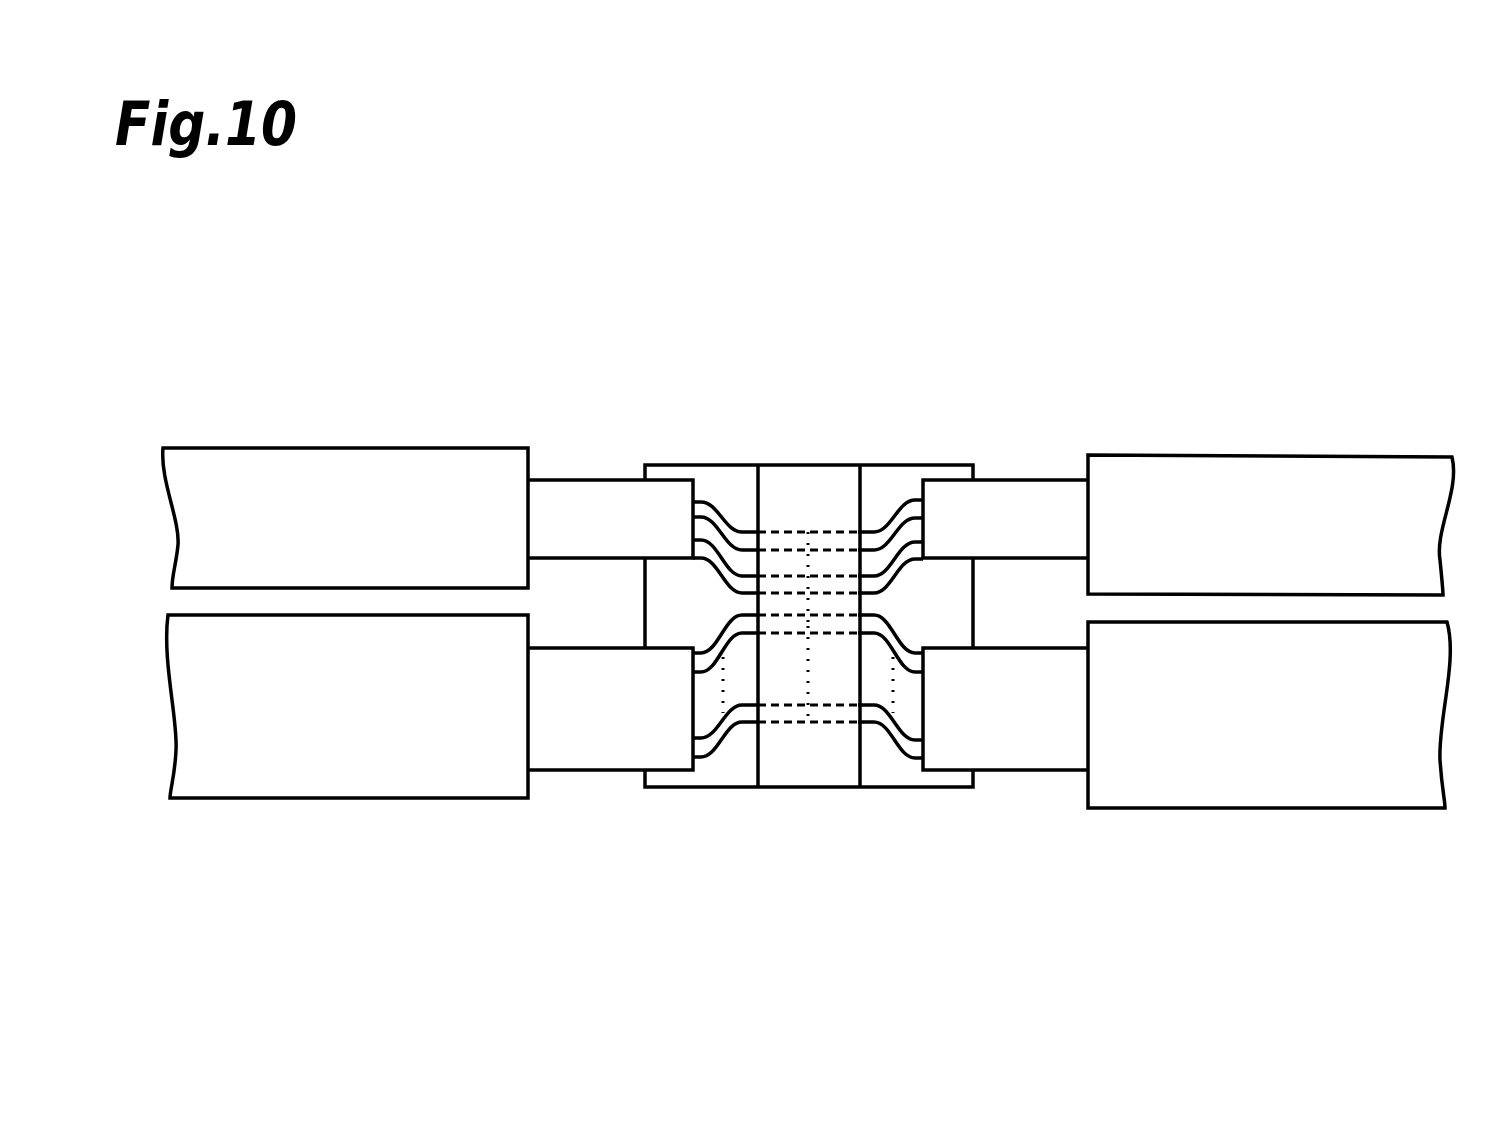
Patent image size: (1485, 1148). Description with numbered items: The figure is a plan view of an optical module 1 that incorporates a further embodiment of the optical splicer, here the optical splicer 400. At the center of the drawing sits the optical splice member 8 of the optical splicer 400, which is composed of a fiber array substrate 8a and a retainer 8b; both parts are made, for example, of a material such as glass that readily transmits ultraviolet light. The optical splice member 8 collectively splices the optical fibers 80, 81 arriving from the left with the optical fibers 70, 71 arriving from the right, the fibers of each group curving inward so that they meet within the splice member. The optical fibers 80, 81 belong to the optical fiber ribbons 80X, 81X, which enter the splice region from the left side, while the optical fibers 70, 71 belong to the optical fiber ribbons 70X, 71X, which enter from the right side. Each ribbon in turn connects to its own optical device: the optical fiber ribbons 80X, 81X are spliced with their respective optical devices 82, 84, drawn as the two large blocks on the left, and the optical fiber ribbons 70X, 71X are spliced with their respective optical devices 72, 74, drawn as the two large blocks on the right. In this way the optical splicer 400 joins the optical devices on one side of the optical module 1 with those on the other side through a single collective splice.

The optical splicer 400 is at (720, 320).
The optical module 1 is at (667, 470).
The optical splice member 8 is at (808, 637).
The fiber array substrate 8a is at (742, 773).
The retainer 8b is at (800, 484).
The optical fibers 80 is at (722, 497).
The optical fibers 81 is at (713, 744).
The optical fibers 70 is at (895, 510).
The optical fibers 71 is at (892, 734).
The optical fiber ribbon 80X is at (599, 497).
The optical fiber ribbon 81X is at (586, 718).
The optical fiber ribbon 70X is at (1016, 498).
The optical fiber ribbon 71X is at (1032, 718).
The optical device 82 is at (357, 465).
The optical device 84 is at (357, 785).
The optical device 72 is at (1262, 473).
The optical device 74 is at (1261, 793).